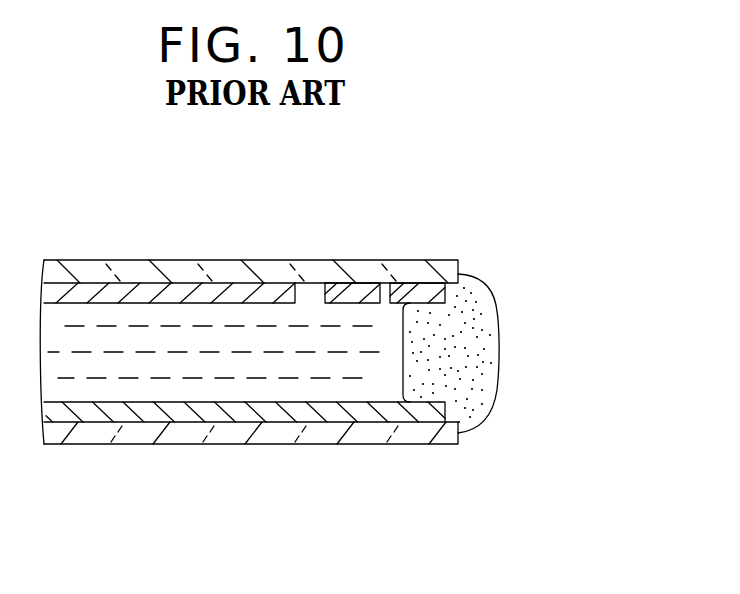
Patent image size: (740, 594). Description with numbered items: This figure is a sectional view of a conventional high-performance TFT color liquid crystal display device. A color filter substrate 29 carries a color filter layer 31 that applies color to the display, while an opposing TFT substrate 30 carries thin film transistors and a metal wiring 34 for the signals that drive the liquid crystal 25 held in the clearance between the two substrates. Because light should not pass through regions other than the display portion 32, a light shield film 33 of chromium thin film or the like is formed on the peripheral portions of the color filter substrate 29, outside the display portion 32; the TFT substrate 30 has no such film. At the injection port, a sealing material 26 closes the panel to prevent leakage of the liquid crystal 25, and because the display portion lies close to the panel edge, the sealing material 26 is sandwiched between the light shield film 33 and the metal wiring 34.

The liquid crystal 25 is at (98, 340).
The sealing material 26 is at (465, 336).
The color filter substrate 29 is at (93, 432).
The TFT substrate 30 is at (170, 268).
The color filter layer 31 is at (238, 412).
The display portion 32 is at (262, 295).
The light shield film 33 is at (382, 410).
The metal wiring 34 is at (362, 298).